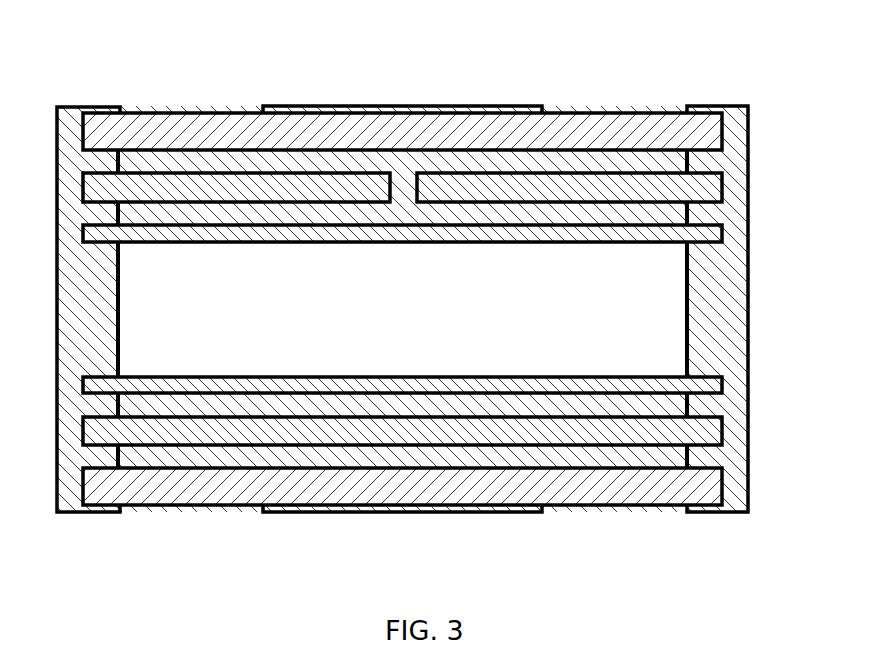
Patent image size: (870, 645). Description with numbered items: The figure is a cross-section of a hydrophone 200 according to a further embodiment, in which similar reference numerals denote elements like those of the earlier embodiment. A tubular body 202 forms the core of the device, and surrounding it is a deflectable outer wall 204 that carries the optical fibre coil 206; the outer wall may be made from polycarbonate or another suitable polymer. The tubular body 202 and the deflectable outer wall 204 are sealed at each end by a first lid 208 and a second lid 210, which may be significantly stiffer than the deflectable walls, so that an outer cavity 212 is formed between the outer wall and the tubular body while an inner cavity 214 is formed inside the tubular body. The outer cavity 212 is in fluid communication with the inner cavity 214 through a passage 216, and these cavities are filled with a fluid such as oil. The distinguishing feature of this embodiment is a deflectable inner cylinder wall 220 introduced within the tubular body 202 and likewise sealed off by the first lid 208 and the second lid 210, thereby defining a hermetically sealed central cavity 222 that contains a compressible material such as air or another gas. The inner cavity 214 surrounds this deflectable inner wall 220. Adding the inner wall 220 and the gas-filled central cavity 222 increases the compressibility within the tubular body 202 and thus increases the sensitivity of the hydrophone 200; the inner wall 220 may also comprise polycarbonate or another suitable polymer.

The hydrophone 200 is at (745, 49).
The tubular body 202 is at (172, 190).
The deflectable outer wall 204 is at (187, 133).
The terminal contact 206 is at (537, 105).
The first lid 208 is at (70, 460).
The second lid 210 is at (733, 462).
The dielectric layer 212 is at (281, 163).
The inner cavity 214 is at (323, 212).
The electrode gap 216 is at (405, 187).
The deflectable inner cylinder wall 220 is at (647, 232).
The central cavity 222 is at (508, 302).